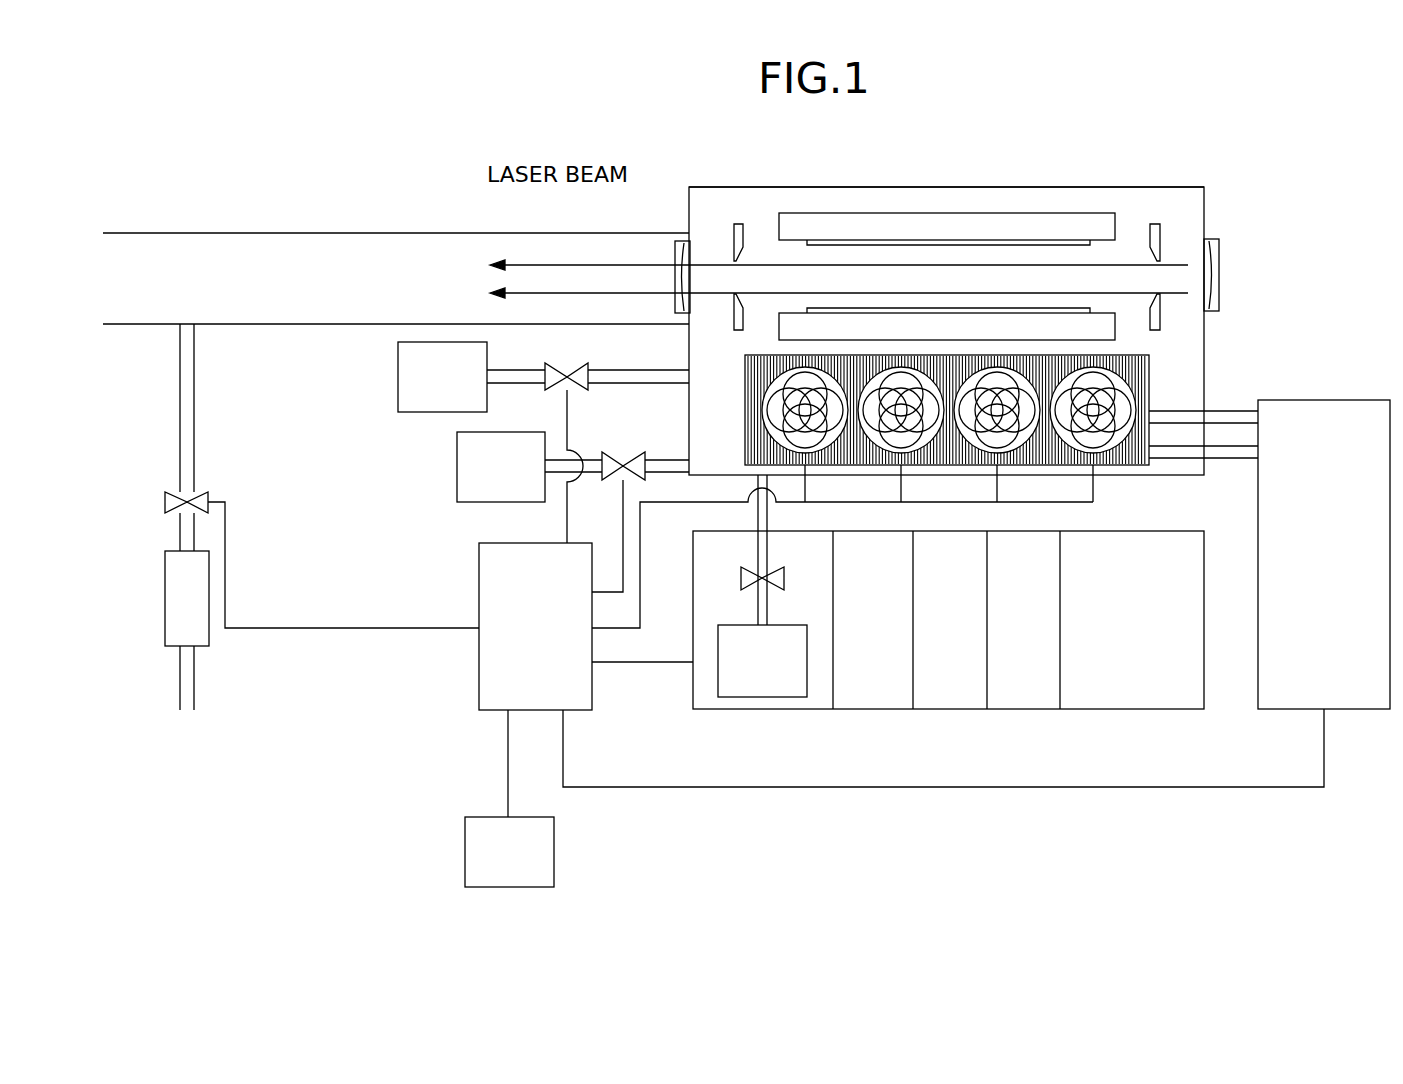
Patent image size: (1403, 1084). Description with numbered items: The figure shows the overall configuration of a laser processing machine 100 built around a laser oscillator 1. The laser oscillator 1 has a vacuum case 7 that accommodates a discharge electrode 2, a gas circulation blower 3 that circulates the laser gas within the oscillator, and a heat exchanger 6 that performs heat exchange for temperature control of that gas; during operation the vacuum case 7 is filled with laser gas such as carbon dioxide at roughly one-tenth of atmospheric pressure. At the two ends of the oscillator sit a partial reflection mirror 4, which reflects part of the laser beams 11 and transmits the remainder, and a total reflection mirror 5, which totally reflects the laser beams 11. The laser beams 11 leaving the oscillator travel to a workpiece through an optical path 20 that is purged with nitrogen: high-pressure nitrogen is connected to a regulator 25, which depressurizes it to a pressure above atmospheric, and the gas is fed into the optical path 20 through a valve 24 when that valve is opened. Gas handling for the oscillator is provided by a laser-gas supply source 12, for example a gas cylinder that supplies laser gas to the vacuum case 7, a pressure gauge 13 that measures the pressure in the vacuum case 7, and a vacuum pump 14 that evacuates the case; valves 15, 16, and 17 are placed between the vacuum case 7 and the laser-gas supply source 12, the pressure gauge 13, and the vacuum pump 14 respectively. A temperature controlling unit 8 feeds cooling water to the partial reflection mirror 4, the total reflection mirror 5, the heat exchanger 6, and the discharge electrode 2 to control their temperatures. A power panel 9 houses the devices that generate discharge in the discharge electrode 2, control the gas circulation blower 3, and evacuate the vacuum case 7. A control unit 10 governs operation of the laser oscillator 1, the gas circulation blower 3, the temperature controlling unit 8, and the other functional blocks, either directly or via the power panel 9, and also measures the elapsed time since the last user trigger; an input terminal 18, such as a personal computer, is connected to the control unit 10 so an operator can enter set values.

The laser oscillator 1 is at (1170, 187).
The discharge electrode 2 is at (944, 205).
The gas circulation blower 3 is at (1125, 378).
The partial reflection mirror 4 is at (675, 250).
The total reflection mirror 5 is at (1220, 272).
The heat exchanger 6 is at (1115, 465).
The vacuum case 7 is at (1058, 187).
The temperature controlling unit 8 is at (1322, 399).
The power panel 9 is at (945, 709).
The control unit 10 is at (479, 690).
The laser beams 11 is at (558, 262).
The laser-gas supply source 12 is at (398, 373).
The pressure gauge 13 is at (457, 462).
The vacuum pump 14 is at (760, 697).
The valve 15 is at (575, 383).
The valve 16 is at (632, 455).
The valve 17 is at (740, 578).
The input terminal 18 is at (465, 850).
The optical path 20 is at (253, 255).
The valve 24 is at (165, 500).
The regulator 25 is at (165, 597).
The laser processing machine 100 is at (1353, 769).